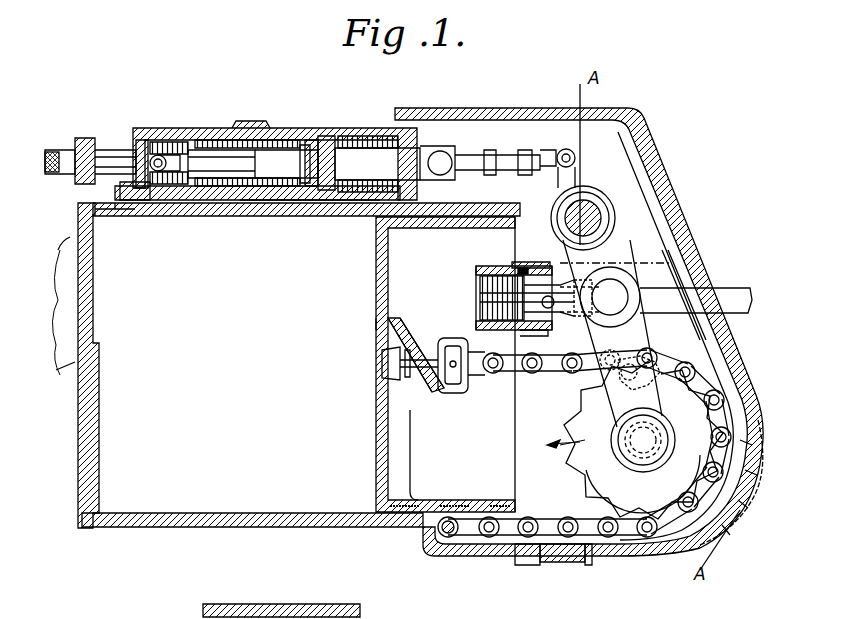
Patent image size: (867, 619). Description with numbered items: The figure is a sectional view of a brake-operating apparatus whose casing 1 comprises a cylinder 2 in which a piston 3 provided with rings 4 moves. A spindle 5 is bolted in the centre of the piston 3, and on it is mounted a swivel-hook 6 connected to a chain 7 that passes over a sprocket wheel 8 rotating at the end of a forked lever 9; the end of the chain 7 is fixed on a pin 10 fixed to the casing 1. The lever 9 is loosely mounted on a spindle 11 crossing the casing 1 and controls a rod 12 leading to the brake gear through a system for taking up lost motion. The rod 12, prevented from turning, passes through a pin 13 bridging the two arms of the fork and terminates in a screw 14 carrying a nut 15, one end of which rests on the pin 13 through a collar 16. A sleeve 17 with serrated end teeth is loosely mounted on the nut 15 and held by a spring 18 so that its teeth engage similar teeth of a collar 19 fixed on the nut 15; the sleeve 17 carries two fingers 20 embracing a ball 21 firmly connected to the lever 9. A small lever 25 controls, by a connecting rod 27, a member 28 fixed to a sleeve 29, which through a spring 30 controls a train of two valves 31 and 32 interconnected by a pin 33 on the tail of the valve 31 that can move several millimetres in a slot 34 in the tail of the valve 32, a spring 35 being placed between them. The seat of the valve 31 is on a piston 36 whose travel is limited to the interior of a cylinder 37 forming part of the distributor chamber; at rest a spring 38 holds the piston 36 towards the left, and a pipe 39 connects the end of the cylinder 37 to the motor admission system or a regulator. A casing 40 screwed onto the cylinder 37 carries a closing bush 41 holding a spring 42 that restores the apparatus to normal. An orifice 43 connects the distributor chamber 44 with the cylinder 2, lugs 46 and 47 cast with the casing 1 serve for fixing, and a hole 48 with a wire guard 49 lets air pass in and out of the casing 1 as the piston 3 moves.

The casing 1 is at (458, 116).
The cylinder 2 is at (180, 514).
The piston 3 is at (375, 432).
The rings 4 is at (400, 512).
The spindle 5 is at (430, 386).
The swivel-hook 6 is at (456, 394).
The chain 7 is at (592, 372).
The sprocket wheel 8 is at (606, 466).
The forked lever 9 is at (648, 392).
The pin 10 is at (445, 535).
The spindle 11 is at (590, 228).
The rod 12 is at (712, 290).
The pin 13 is at (614, 292).
The screw 14 is at (520, 307).
The nut 15 is at (500, 300).
The collar 16 is at (588, 312).
The sleeve 17 is at (540, 265).
The spring 18 is at (522, 262).
The collar 19 is at (490, 268).
The fingers 20 is at (551, 368).
The ball 21 is at (550, 340).
The small lever 25 is at (578, 170).
The connecting rod 27 is at (508, 157).
The member 28 is at (352, 160).
The sleeve 29 is at (310, 145).
The spring 30 is at (259, 121).
The valve 31 is at (207, 155).
The valve 32 is at (103, 157).
The pin 33 is at (153, 190).
The slot 34 is at (160, 156).
The spring 35 is at (145, 140).
The piston 36 is at (196, 140).
The cylinder 37 is at (228, 138).
The spring 38 is at (240, 208).
The pipe 39 is at (65, 166).
The casing 40 is at (314, 140).
The closing bush 41 is at (418, 184).
The spring 42 is at (348, 200).
The orifice 43 is at (136, 212).
The chamber 44 is at (190, 204).
The lug 46 is at (70, 338).
The lug 47 is at (744, 508).
The hole 48 is at (565, 562).
The wire guard 49 is at (548, 563).